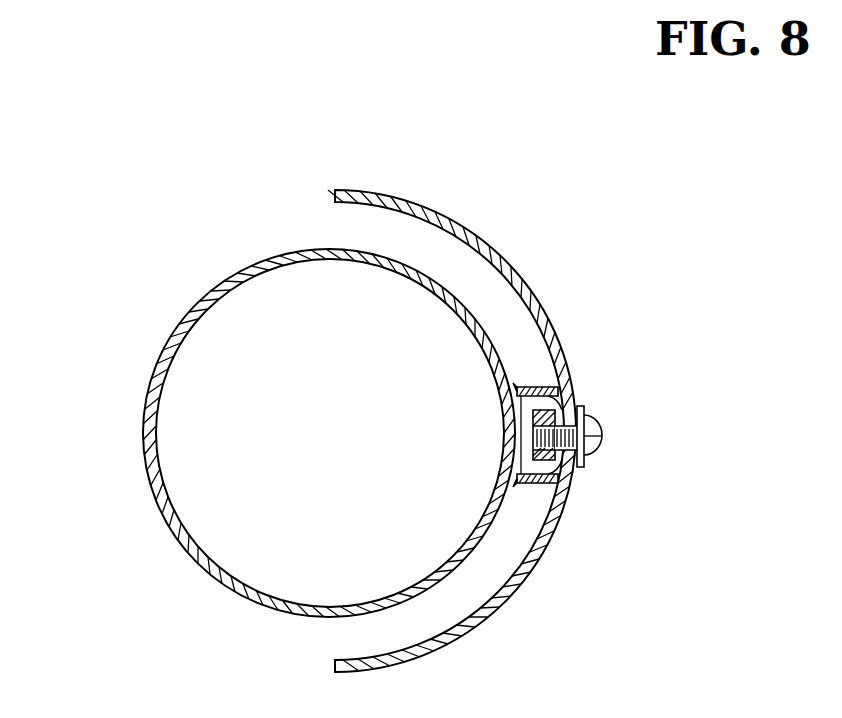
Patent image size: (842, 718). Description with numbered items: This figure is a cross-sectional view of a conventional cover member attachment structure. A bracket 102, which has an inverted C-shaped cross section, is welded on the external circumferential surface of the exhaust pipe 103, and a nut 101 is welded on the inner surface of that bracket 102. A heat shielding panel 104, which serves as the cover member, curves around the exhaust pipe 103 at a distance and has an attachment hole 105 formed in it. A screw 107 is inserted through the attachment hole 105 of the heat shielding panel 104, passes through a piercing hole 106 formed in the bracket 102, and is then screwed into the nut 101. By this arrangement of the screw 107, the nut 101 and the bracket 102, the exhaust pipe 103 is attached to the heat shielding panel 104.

The nut 101 is at (562, 374).
The bracket 102 is at (530, 387).
The exhaust pipe 103 is at (156, 366).
The heat shielding panel 104 is at (418, 203).
The attachment hole 105 is at (597, 438).
The piercing hole 106 is at (538, 437).
The screw 107 is at (595, 454).